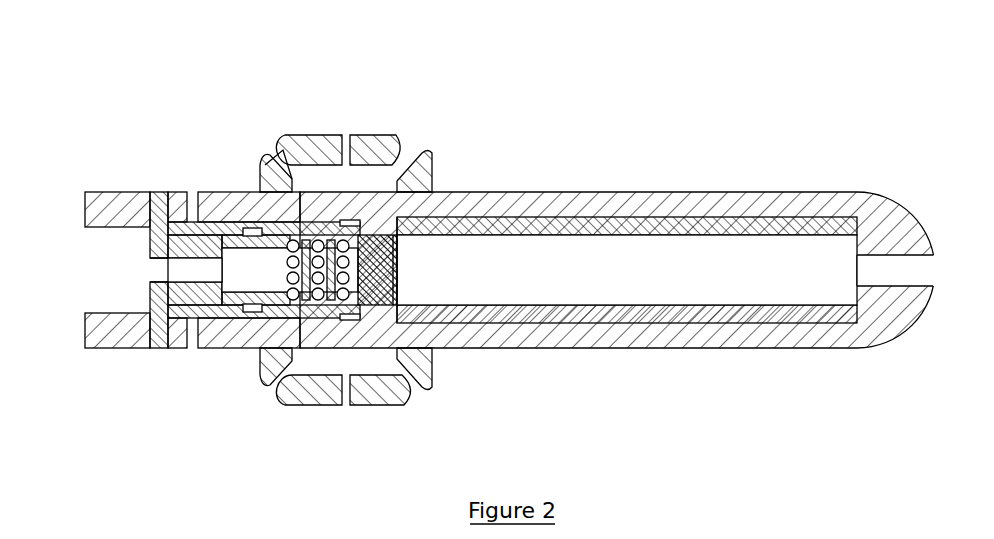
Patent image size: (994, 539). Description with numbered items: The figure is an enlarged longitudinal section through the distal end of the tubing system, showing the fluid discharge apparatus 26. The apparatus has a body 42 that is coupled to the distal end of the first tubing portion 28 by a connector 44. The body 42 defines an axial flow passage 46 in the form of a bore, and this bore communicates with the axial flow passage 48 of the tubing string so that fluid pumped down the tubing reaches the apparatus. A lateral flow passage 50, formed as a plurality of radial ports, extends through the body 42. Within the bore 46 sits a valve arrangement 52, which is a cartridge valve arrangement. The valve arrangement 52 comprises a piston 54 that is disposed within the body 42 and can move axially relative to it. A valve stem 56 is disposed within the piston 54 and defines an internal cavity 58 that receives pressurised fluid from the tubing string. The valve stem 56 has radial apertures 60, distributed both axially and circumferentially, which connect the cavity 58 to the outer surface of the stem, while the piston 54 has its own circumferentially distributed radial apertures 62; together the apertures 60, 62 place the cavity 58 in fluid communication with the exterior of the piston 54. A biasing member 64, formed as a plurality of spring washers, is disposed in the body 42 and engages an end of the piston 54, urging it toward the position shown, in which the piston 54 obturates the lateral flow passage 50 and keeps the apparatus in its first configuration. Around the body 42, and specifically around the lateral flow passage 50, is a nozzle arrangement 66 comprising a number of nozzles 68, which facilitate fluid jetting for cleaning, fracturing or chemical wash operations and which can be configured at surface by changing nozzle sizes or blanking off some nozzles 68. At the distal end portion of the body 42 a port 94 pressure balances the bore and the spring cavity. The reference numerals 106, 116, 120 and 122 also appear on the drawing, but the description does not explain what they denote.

The fluid discharge apparatus 26 is at (584, 113).
The first tubing portion 28 is at (113, 350).
The body 42 is at (690, 191).
The connector 44 is at (158, 350).
The axial flow passage 46 is at (515, 284).
The axial flow passage 48 is at (100, 292).
The lateral flow passage 50 is at (328, 215).
The valve arrangement 52 is at (255, 262).
The piston 54 is at (225, 222).
The valve stem 56 is at (173, 234).
The internal cavity 58 is at (243, 322).
The radial apertures 60 is at (292, 325).
The radial apertures 62 is at (258, 312).
The biasing member 64 is at (750, 303).
The nozzle arrangement 66 is at (309, 165).
The nozzles 68 is at (275, 145).
The port 94 is at (885, 268).
The shoulder 106 is at (158, 263).
The groove 116 is at (252, 232).
The spring 120 is at (333, 320).
The gaps 122 is at (380, 173).